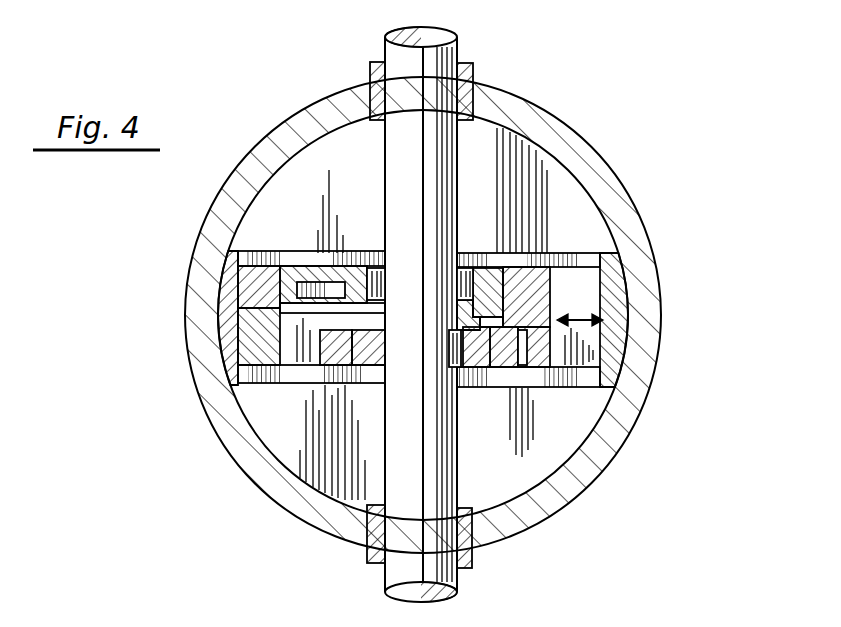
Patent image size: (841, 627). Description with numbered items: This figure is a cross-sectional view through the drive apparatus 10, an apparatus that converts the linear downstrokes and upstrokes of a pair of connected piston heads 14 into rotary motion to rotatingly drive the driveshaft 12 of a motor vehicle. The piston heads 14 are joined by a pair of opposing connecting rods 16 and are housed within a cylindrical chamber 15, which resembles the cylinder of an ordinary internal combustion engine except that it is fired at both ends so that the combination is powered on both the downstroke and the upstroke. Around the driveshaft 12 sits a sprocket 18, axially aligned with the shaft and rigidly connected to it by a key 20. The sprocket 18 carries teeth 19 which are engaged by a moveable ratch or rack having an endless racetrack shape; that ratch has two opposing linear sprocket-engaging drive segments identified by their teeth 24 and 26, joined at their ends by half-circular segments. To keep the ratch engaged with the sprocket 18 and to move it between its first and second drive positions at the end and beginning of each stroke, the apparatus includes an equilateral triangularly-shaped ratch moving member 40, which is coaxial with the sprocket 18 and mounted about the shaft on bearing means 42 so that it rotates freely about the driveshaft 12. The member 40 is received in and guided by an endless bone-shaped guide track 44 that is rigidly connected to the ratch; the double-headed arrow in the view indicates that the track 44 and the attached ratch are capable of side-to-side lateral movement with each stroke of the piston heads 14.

The drive apparatus 10 is at (600, 139).
The driveshaft 12 is at (445, 57).
The piston heads 14 is at (513, 463).
The cylindrical chamber 15 is at (648, 318).
The connecting rods 16 is at (222, 312).
The sprocket 18 is at (365, 352).
The teeth 19 is at (330, 353).
The key 20 is at (452, 350).
The teeth 24 is at (255, 342).
The teeth 26 is at (535, 355).
The ratch moving member 40 is at (487, 272).
The bearing means 42 is at (375, 256).
The guide track 44 is at (238, 260).